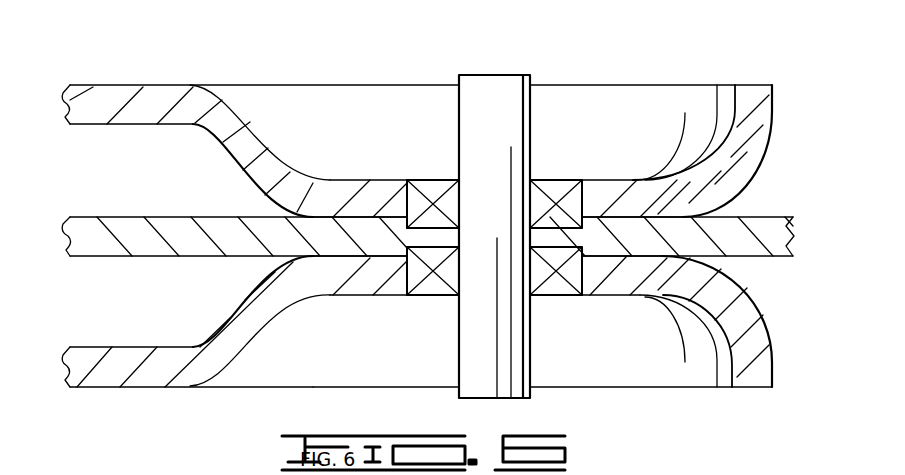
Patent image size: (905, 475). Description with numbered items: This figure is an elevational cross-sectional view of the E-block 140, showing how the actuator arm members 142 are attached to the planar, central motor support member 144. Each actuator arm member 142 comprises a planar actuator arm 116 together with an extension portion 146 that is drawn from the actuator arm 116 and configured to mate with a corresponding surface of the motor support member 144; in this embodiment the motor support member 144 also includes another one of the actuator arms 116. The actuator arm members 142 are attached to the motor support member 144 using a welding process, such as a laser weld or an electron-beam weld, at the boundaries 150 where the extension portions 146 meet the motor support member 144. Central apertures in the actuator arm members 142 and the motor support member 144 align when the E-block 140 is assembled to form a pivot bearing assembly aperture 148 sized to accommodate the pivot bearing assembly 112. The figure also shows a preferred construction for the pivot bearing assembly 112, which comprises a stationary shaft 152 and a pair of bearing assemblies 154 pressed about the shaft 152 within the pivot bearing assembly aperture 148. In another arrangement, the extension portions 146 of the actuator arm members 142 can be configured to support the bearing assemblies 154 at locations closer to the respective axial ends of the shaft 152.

The E-block 140 is at (165, 50).
The actuator arm 116 is at (118, 125).
The extension portion 146 is at (238, 155).
The boundaries 150 is at (326, 208).
The bearing assemblies 154 is at (433, 180).
The pivot bearing assembly 112 is at (504, 86).
The stationary shaft 152 is at (483, 88).
The actuator arm members 142 is at (752, 98).
The motor support member 144 is at (757, 211).
The pivot bearing assembly aperture 148 is at (438, 336).